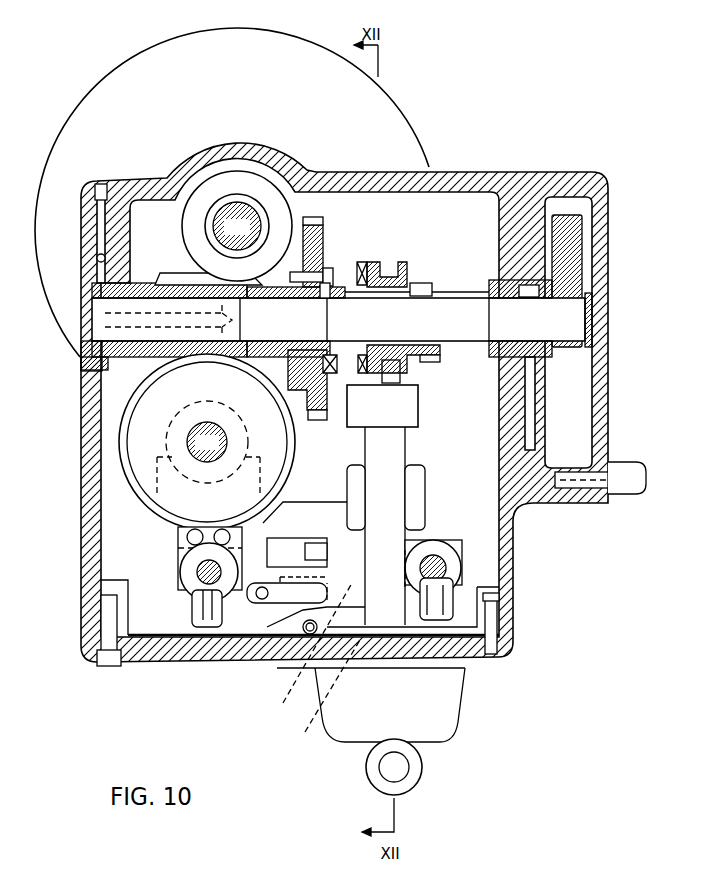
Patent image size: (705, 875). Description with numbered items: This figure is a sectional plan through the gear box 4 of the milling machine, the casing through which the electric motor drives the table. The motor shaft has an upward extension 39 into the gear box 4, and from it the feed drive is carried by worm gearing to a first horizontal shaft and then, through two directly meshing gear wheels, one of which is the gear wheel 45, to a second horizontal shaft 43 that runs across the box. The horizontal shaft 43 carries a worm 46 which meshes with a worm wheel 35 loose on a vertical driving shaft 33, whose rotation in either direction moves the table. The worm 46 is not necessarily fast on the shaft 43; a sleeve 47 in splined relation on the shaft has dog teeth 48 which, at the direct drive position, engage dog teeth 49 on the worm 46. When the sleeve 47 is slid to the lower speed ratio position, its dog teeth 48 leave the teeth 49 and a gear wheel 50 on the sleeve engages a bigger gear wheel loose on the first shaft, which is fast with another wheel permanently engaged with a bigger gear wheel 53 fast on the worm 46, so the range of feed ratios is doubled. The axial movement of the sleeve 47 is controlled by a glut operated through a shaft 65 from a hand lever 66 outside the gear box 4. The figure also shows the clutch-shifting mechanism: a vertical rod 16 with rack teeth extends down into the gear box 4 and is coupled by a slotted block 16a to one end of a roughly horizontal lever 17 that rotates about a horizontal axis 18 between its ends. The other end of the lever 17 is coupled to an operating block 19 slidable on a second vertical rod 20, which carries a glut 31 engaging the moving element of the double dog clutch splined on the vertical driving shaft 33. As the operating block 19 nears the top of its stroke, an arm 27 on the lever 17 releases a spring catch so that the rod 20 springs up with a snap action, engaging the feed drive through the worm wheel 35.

The gear box 4 is at (81, 443).
The vertical rod 16 is at (447, 570).
The slotted block 16a is at (470, 583).
The horizontal lever 17 is at (374, 698).
The horizontal axis 18 is at (364, 654).
The operating block 19 is at (190, 580).
The second vertical rod 20 is at (200, 573).
The arm 27 is at (267, 603).
The glut 31 is at (170, 487).
The vertical driving shaft 33 is at (207, 442).
The worm wheel 35 is at (150, 407).
The motor shaft extension 39 is at (237, 226).
The second horizontal shaft 43 is at (384, 330).
The gear wheel 45 is at (564, 215).
The worm 46 is at (170, 278).
The sleeve 47 is at (392, 278).
The dog teeth 48 is at (361, 262).
The dog teeth 49 is at (333, 375).
The gear wheel 50 is at (430, 281).
The bigger gear wheel 53 is at (325, 222).
The shaft 65 is at (395, 440).
The hand lever 66 is at (394, 762).